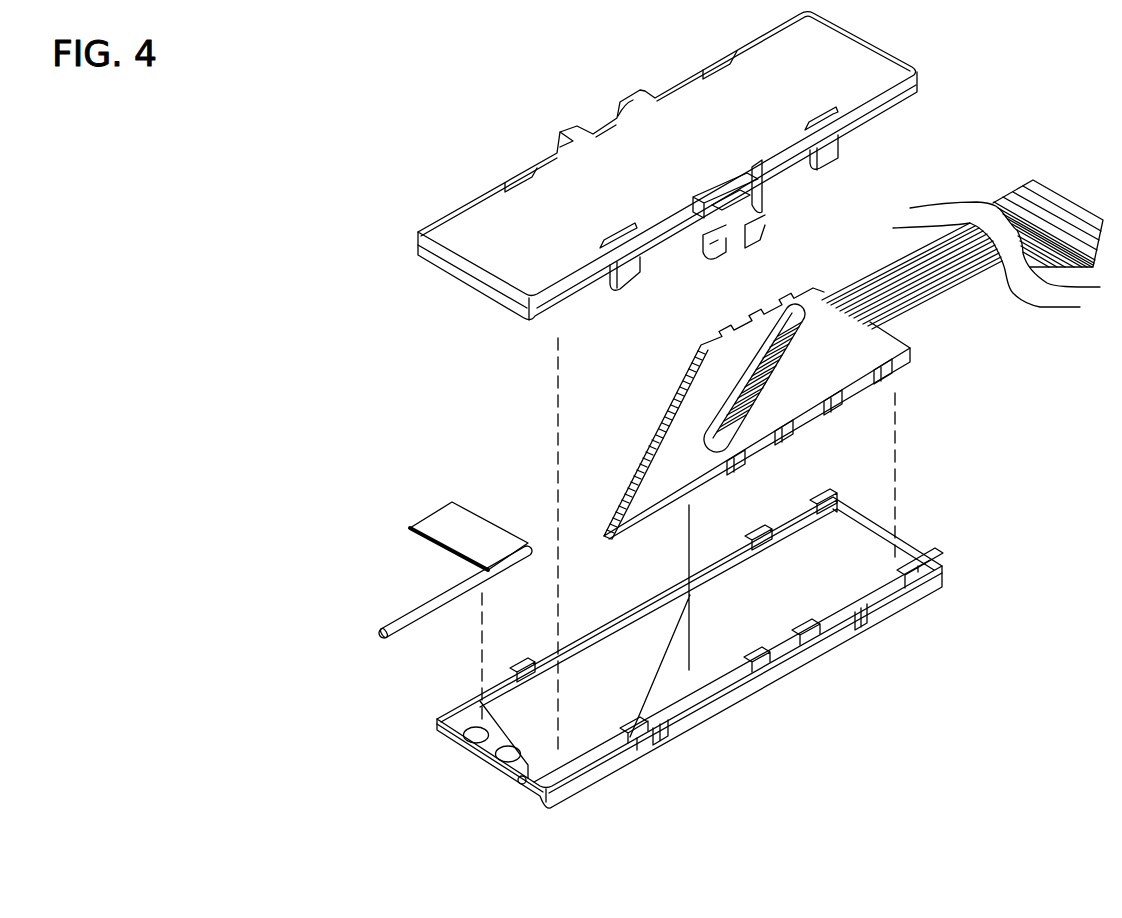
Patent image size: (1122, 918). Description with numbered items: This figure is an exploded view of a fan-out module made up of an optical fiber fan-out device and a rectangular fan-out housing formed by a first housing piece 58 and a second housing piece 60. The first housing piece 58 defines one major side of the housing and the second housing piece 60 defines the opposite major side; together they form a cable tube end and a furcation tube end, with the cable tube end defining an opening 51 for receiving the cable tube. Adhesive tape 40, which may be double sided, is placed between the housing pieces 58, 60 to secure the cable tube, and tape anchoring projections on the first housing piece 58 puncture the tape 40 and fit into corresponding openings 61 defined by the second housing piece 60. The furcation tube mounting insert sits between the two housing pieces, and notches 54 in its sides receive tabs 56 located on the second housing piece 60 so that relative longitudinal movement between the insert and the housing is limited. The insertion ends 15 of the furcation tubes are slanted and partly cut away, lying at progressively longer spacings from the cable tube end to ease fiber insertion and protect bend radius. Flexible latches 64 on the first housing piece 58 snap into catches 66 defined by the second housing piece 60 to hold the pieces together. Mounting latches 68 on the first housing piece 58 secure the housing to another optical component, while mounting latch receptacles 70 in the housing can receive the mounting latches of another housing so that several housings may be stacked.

The first housing piece 58 is at (467, 218).
The mounting latch receptacles 70 is at (738, 200).
The latches 64 is at (827, 163).
The mounting latches 68 is at (763, 240).
The insertion ends 15 is at (653, 438).
The notches 54 is at (728, 443).
The adhesive tape 40 is at (448, 518).
The second housing piece 60 is at (907, 563).
The tabs 56 is at (773, 550).
The catches 66 is at (843, 633).
The openings 61 is at (466, 735).
The opening 51 is at (517, 777).